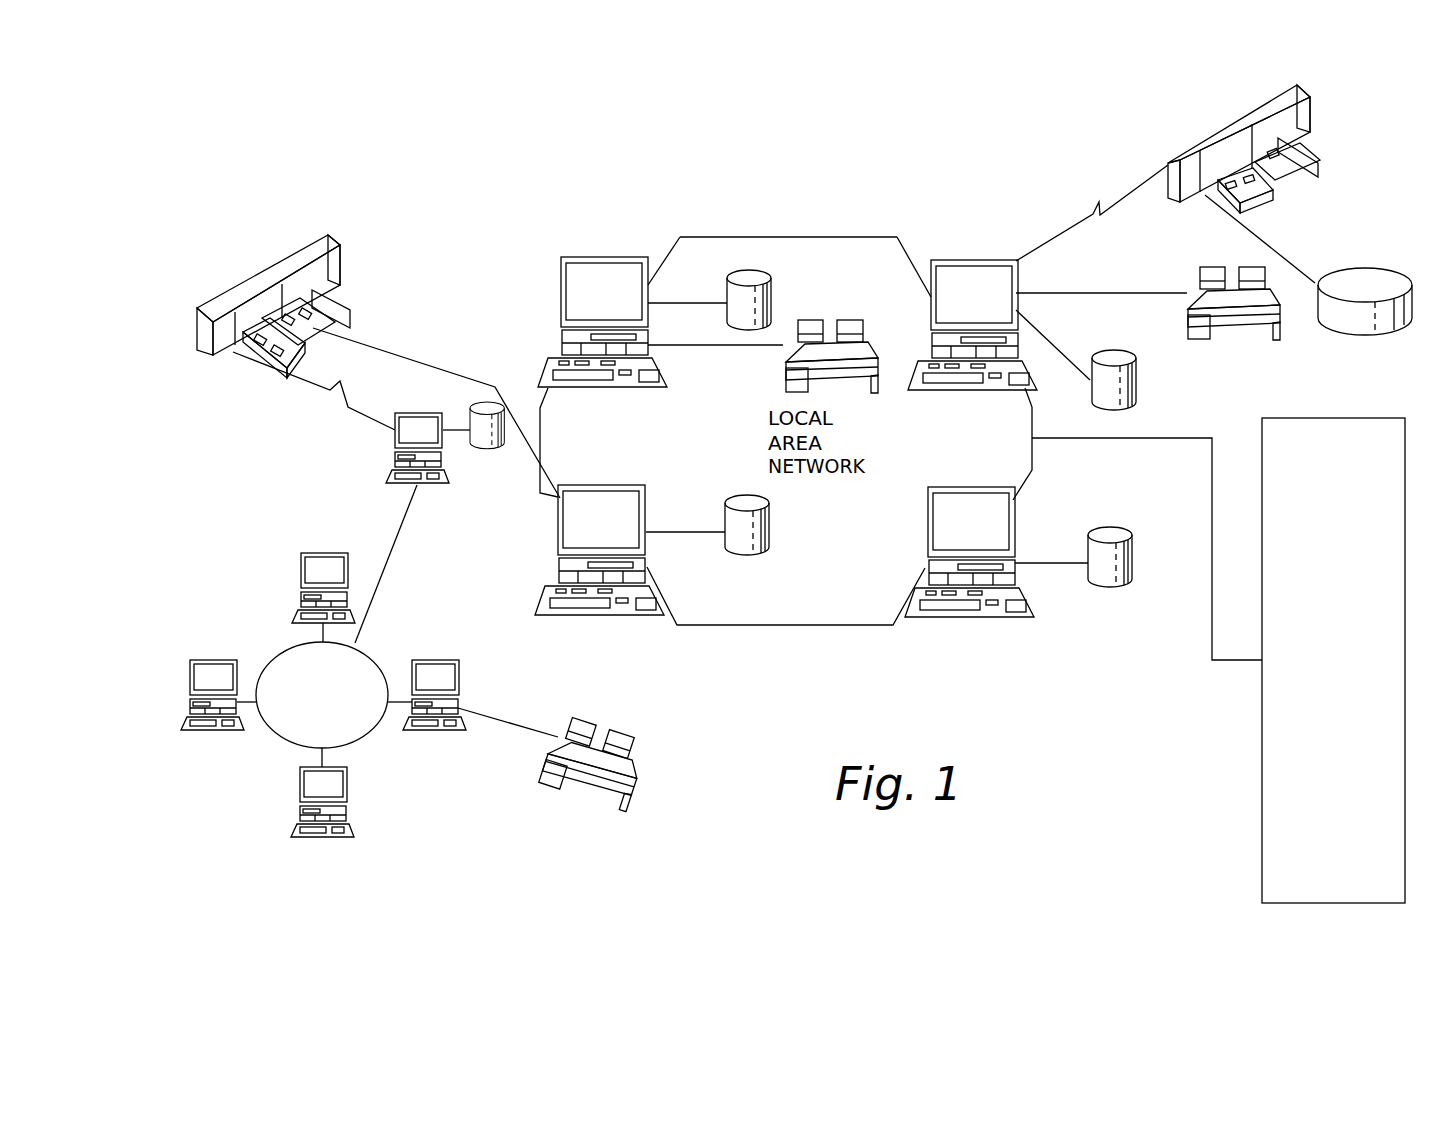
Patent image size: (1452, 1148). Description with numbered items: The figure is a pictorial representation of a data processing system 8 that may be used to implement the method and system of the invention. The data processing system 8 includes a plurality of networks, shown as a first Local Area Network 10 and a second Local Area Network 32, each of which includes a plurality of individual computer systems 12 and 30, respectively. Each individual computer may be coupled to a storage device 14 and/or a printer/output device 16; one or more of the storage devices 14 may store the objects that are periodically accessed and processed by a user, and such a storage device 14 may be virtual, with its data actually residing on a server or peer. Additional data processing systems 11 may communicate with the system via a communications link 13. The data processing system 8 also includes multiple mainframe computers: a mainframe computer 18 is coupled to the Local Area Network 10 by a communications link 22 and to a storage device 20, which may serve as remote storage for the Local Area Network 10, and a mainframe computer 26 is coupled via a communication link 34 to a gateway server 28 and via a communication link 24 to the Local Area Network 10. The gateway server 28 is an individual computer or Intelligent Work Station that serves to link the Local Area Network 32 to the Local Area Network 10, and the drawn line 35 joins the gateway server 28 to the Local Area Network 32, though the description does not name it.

The data processing system 8 is at (821, 193).
The Local Area Network (LAN) 10 is at (812, 628).
The additional data processing systems 11 is at (1326, 418).
The individual computer systems 12 is at (624, 257).
The communications link 13 is at (1097, 440).
The storage device 14 is at (771, 285).
The printer/output device 16 is at (832, 326).
The mainframe computer 18 is at (1240, 116).
The storage device 20 is at (1396, 238).
The communications link 22 is at (1130, 187).
The communication link 24 is at (423, 362).
The mainframe computer 26 is at (335, 238).
The gateway server 28 is at (420, 412).
The individual computer systems 30 is at (335, 553).
The Local Area Network (LAN) 32 is at (282, 737).
The communication link 34 is at (340, 415).
The communication link 35 is at (382, 580).